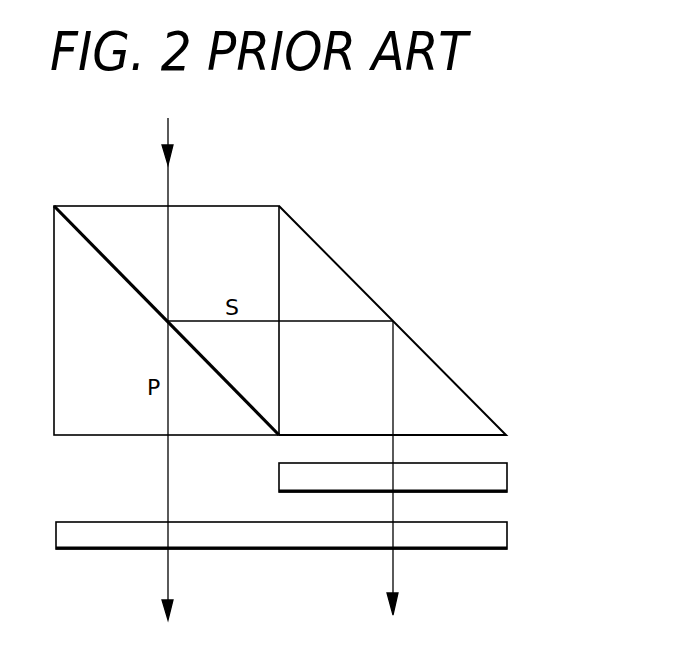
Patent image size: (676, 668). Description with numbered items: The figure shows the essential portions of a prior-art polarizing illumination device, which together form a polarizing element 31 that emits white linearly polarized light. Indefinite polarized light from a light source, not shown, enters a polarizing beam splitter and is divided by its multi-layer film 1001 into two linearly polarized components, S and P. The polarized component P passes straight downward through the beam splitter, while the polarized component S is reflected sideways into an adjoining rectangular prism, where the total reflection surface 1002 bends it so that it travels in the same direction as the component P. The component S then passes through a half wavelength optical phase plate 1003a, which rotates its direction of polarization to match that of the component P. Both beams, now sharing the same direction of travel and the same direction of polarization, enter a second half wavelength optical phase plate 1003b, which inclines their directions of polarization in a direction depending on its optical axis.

The polarizing element 31 is at (250, 228).
The multi-layer film 1001 is at (98, 250).
The total reflection surface 1002 is at (322, 280).
The half wavelength optical phase plate 1003a is at (496, 477).
The half wavelength optical phase plate 1003b is at (496, 537).